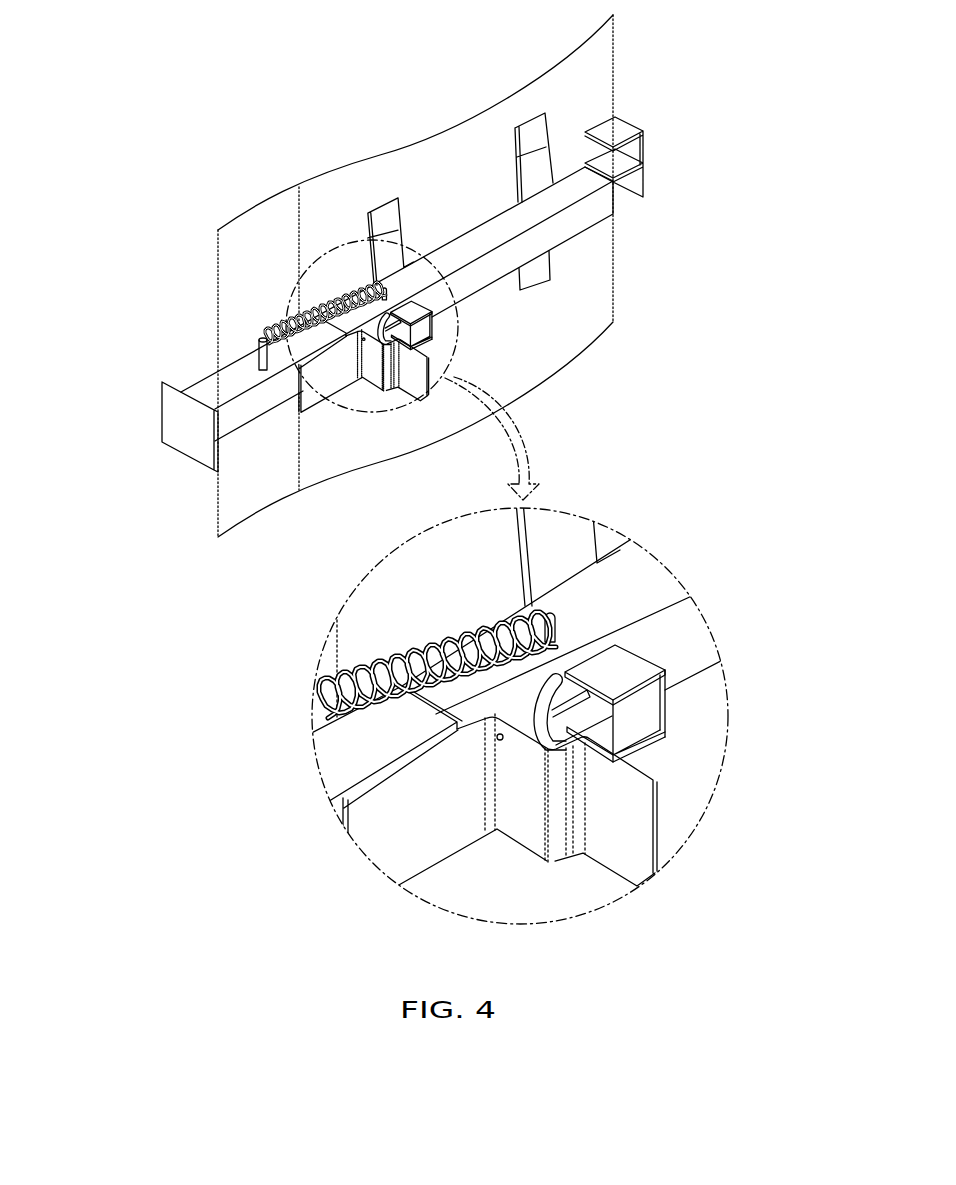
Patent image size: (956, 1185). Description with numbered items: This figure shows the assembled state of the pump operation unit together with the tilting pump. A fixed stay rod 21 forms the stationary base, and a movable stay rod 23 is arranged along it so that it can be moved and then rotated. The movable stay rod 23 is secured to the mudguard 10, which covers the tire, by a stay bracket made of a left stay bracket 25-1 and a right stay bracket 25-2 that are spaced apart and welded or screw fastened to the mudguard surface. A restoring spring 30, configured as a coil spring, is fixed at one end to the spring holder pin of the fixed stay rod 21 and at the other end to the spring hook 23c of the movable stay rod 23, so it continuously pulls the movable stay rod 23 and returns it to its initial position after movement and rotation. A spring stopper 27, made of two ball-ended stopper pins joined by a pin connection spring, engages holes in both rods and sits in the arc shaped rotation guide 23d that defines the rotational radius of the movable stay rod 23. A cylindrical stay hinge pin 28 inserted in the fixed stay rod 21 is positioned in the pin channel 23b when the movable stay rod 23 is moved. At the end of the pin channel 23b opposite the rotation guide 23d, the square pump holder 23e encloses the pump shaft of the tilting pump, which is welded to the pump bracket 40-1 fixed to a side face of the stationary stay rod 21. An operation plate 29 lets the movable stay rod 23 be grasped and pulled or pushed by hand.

The mudguard 10 is at (596, 272).
The fixed stay rod 21 is at (222, 388).
The movable stay rod 23 is at (622, 201).
The pin channel 23b is at (554, 712).
The spring hook 23c is at (372, 285).
The rotation guide 23d is at (596, 758).
The pump holder 23e is at (433, 307).
The left stay bracket 25-1 is at (384, 218).
The right stay bracket 25-2 is at (533, 137).
The spring stopper 27 is at (498, 742).
The stay hinge pin 28 is at (541, 742).
The operation plate 29 is at (617, 125).
The restoring spring 30 is at (266, 332).
The pump bracket 40-1 is at (432, 362).